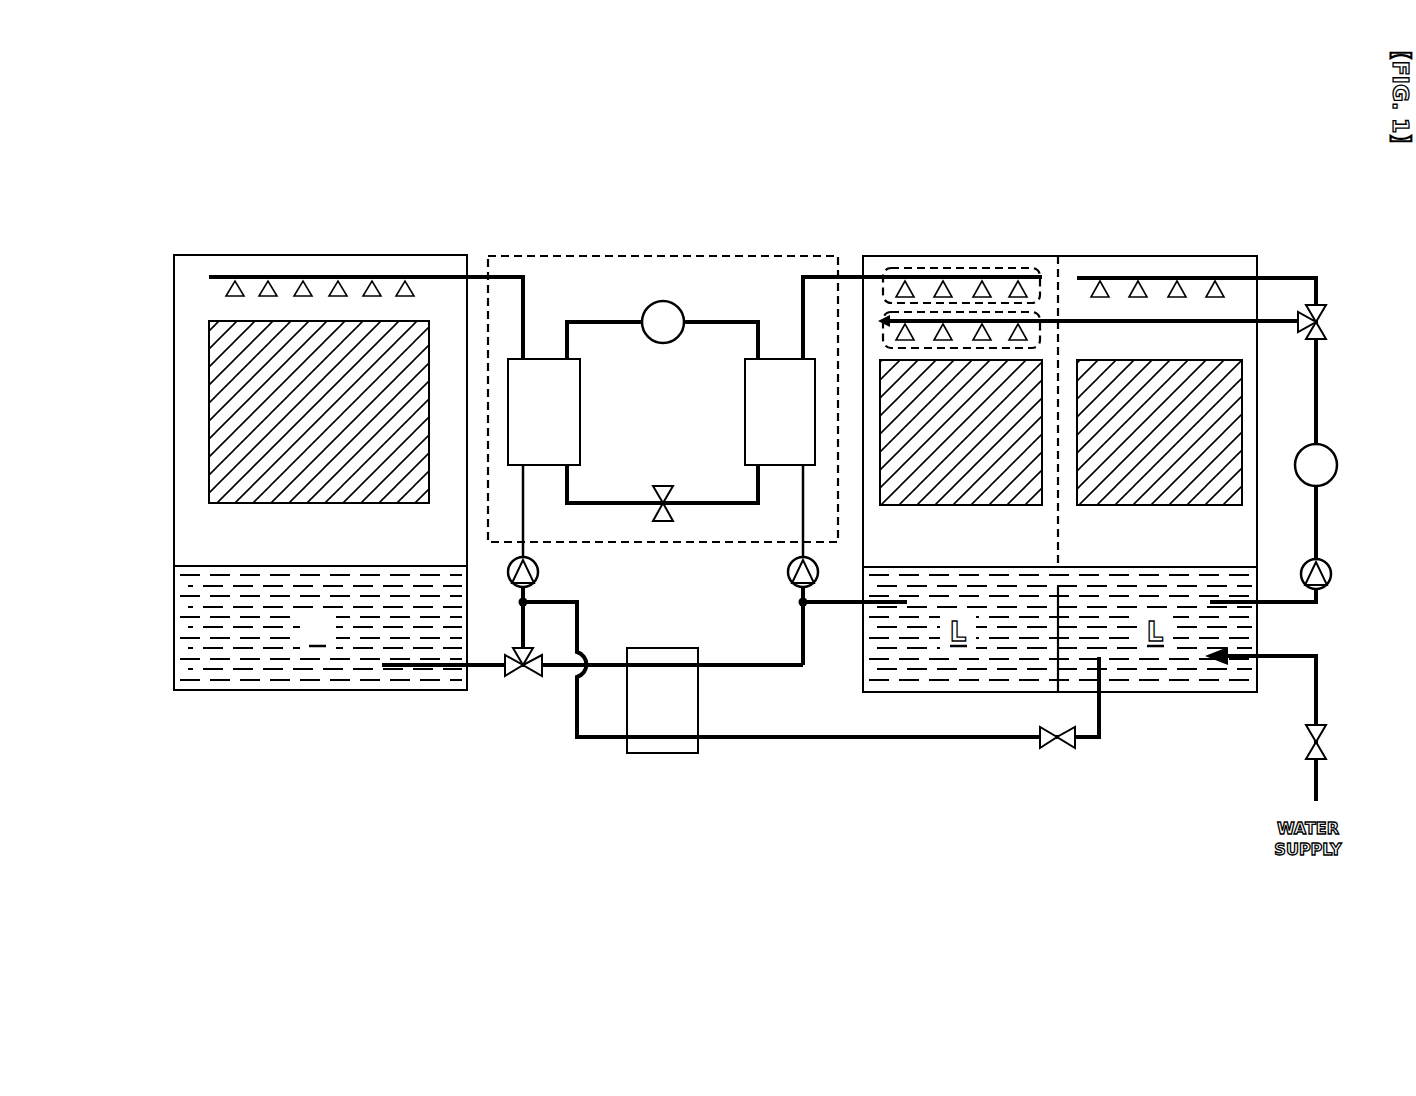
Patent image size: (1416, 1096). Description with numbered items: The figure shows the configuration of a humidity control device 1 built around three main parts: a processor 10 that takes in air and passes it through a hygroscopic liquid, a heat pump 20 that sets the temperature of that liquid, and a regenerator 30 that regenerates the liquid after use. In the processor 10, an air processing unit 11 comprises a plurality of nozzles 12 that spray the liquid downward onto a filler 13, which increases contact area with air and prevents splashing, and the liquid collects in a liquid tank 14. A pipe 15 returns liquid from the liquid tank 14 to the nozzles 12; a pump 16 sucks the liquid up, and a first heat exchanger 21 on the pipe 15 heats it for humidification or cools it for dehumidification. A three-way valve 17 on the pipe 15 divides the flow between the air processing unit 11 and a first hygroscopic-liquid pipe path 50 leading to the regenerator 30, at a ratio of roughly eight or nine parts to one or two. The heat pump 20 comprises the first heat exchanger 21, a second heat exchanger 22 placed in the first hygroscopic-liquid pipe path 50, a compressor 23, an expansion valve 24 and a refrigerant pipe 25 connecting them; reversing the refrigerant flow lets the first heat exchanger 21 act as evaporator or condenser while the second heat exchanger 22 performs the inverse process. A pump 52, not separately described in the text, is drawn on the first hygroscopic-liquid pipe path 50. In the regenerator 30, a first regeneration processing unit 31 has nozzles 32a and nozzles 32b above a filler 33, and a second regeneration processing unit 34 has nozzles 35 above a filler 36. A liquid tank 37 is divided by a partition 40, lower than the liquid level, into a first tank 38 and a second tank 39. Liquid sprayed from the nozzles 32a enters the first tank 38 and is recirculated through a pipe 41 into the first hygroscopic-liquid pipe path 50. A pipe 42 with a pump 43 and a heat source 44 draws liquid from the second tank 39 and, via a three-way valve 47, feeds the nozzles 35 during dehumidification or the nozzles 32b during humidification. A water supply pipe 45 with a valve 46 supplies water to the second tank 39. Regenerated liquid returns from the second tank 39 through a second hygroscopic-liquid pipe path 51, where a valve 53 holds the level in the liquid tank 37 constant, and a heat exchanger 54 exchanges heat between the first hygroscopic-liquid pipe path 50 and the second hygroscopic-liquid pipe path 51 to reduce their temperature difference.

The humidity control device 1 is at (712, 116).
The processor 10 is at (242, 255).
The air processing unit 11 is at (457, 188).
The nozzles 12 is at (235, 272).
The filler 13 is at (420, 352).
The liquid tank 14 is at (180, 620).
The pipe 15 is at (520, 257).
The pump 16 is at (541, 568).
The three-way valve 17 is at (520, 674).
The heat pump 20 is at (668, 256).
The first heat exchanger 21 is at (582, 412).
The second heat exchanger 22 is at (745, 386).
The compressor 23 is at (647, 307).
The expansion valve 24 is at (665, 485).
The refrigerant pipe 25 is at (568, 320).
The regenerator 30 is at (1080, 256).
The first regeneration processing unit 31 is at (1070, 188).
The nozzles 32a is at (922, 270).
The nozzles 32b is at (1037, 335).
The filler 33 is at (888, 383).
The second regeneration processing unit 34 is at (1140, 188).
The nozzles 35 is at (1100, 272).
The filler 36 is at (1243, 365).
The liquid tank 37 is at (1228, 772).
The first tank 38 is at (1032, 675).
The second tank 39 is at (1183, 675).
The partition 40 is at (1062, 602).
The pipe 41 is at (832, 606).
The pipe 42 is at (1322, 398).
The pump 43 is at (1332, 578).
The heat source 44 is at (1339, 465).
The water supply pipe 45 is at (1322, 680).
The valve 46 is at (1327, 740).
The three-way valve 47 is at (1328, 320).
The first hygroscopic-liquid pipe path 50 is at (765, 668).
The second hygroscopic-liquid pipe path 51 is at (872, 739).
The pump 52 is at (786, 568).
The valve 53 is at (1055, 748).
The heat exchanger 54 is at (665, 755).